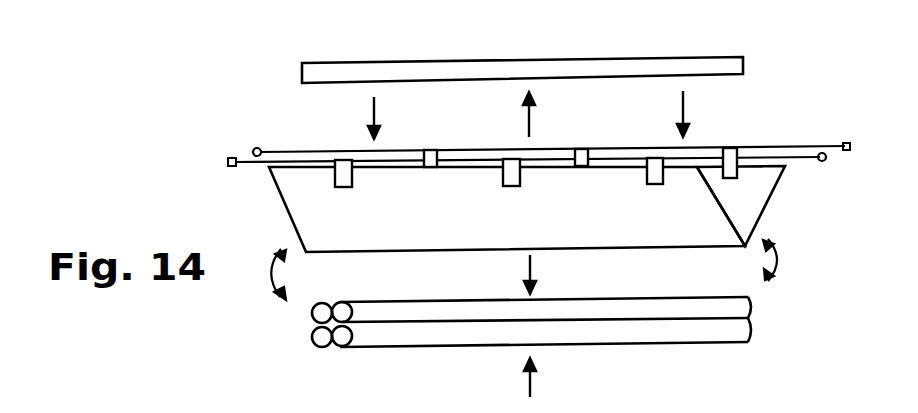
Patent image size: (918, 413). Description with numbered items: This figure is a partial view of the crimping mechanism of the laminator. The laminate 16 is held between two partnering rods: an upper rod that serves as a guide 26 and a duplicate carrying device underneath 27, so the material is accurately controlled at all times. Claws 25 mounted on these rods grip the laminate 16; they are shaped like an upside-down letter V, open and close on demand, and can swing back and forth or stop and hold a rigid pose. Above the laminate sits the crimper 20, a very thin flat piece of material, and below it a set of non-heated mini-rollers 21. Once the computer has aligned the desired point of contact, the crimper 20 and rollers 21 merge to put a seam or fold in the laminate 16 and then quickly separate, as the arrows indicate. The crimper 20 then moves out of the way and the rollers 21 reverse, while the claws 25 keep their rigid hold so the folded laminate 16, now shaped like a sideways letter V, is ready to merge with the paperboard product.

The crimper 20 is at (545, 70).
The laminate 16 is at (527, 209).
The non-heated rollers 21 is at (552, 322).
The claws 25 is at (533, 169).
The rod guide 26 is at (545, 137).
The duplicate carrying device underneath 27 is at (537, 174).